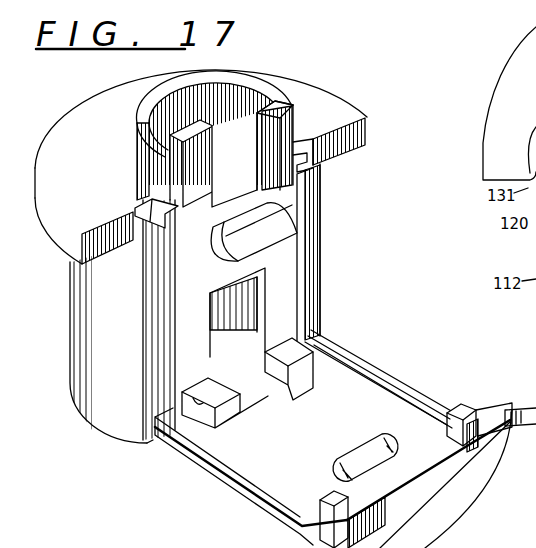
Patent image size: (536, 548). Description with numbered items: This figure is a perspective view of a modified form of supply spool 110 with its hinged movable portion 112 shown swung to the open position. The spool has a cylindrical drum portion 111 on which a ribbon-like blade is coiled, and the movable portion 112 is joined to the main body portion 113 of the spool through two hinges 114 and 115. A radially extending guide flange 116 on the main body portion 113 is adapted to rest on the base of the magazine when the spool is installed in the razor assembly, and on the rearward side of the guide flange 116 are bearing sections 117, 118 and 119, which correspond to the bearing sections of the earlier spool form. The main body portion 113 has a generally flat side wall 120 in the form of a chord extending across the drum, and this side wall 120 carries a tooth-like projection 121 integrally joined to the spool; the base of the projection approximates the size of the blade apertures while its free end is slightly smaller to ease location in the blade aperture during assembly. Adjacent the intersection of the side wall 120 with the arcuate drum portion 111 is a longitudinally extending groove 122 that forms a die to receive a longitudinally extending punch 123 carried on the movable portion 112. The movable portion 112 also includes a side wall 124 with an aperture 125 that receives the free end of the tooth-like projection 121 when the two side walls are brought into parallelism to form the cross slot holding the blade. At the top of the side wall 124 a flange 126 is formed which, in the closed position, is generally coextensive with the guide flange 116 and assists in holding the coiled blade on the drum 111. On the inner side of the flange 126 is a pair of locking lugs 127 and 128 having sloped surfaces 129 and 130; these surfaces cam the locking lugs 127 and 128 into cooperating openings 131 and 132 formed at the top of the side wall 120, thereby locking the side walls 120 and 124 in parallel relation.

The supply spool 110 is at (377, 198).
The cylindrical drum portion 111 is at (103, 397).
The movable portion 112 is at (237, 462).
The main body portion 113 is at (91, 310).
The hinge 114 is at (218, 392).
The hinge 115 is at (265, 366).
The guide flange 116 is at (305, 96).
The bearing section 117 is at (165, 88).
The bearing section 118 is at (192, 130).
The bearing section 119 is at (280, 104).
The side wall 120 is at (298, 292).
The tooth-like projection 121 is at (272, 234).
The groove 122 is at (311, 191).
The punch 123 is at (378, 372).
The side wall 124 is at (378, 408).
The aperture 125 is at (368, 452).
The flange 126 is at (424, 498).
The locking lug 127 is at (344, 516).
The locking lug 128 is at (460, 442).
The sloped surface 129 is at (322, 497).
The sloped surface 130 is at (460, 410).
The opening 131 is at (140, 203).
The opening 132 is at (301, 156).